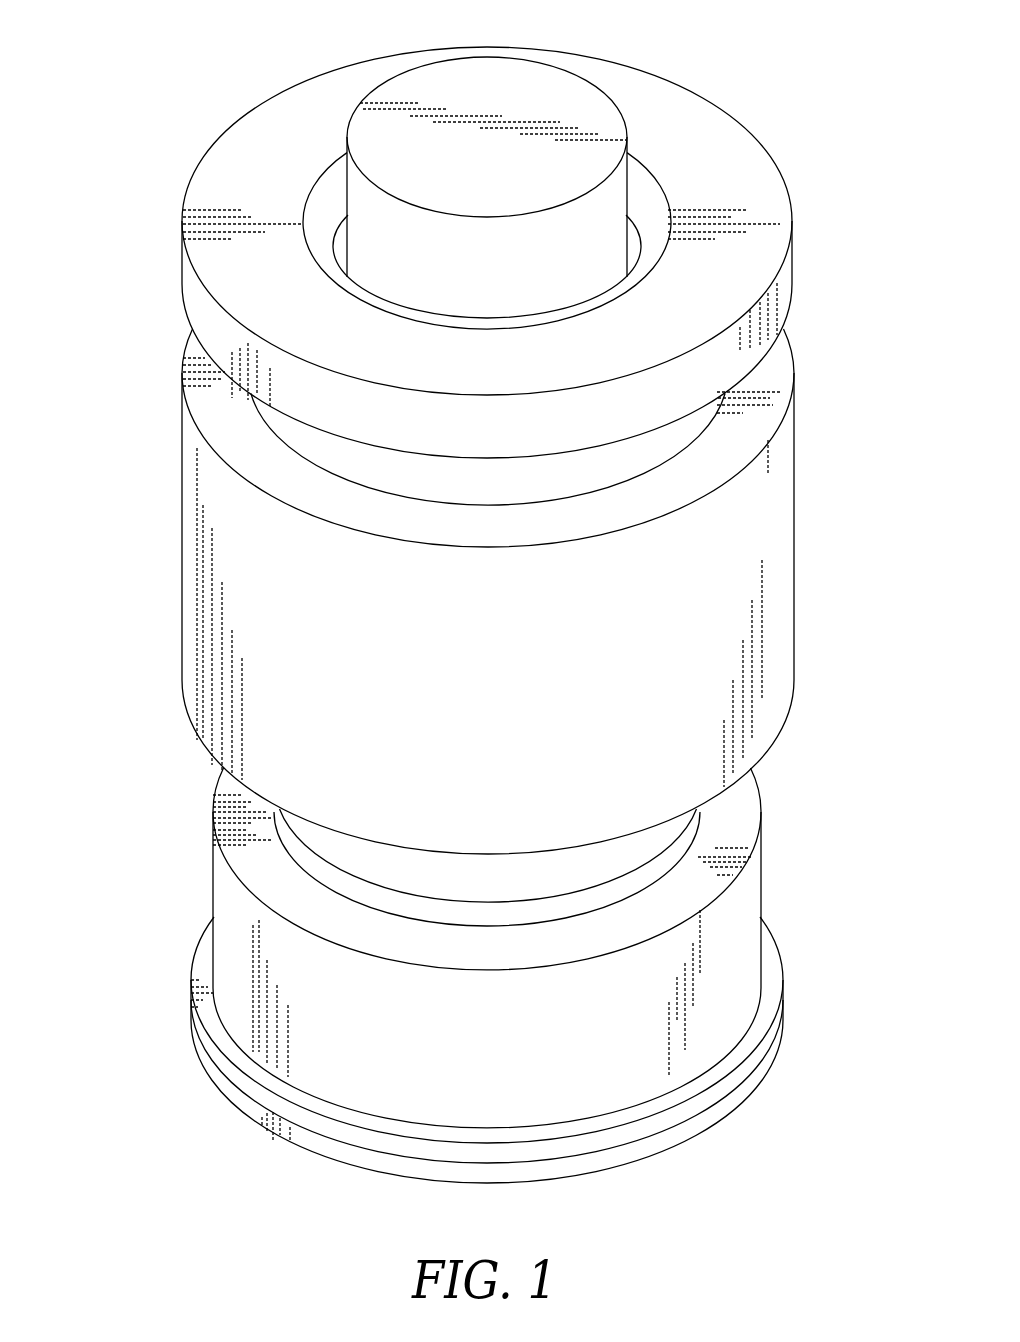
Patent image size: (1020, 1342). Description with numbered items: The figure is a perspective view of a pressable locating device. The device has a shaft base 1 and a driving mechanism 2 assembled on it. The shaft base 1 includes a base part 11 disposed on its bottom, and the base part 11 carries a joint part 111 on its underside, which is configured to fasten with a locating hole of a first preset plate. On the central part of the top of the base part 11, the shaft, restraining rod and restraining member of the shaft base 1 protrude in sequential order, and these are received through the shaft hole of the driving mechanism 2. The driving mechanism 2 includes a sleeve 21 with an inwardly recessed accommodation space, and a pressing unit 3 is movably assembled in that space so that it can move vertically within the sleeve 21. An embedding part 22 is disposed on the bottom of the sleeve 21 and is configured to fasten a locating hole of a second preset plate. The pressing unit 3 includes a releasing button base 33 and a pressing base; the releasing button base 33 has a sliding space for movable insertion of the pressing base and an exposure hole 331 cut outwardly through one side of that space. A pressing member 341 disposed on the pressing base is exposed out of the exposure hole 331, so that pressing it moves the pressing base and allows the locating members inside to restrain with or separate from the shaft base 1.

The shaft base 1 is at (764, 893).
The base part 11 is at (715, 982).
The joint part 111 is at (630, 1103).
The driving mechanism 2 is at (75, 98).
The sleeve 21 is at (190, 589).
The embedding part 22 is at (422, 870).
The pressing unit 3 is at (778, 0).
The releasing button base 33 is at (763, 218).
The exposure hole 331 is at (628, 220).
The pressing member 341 is at (538, 113).